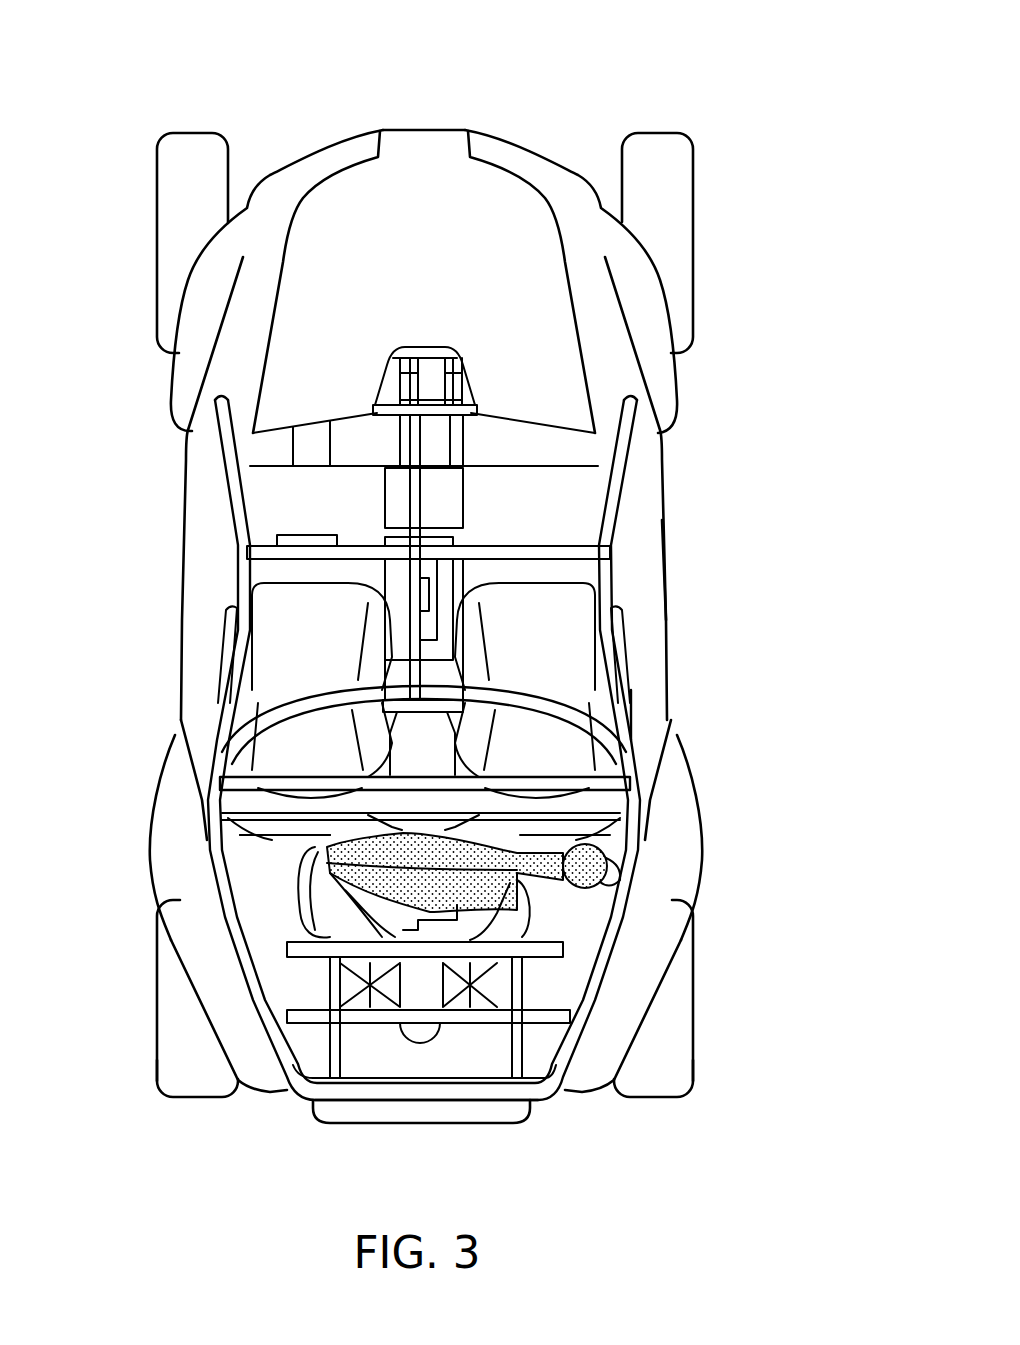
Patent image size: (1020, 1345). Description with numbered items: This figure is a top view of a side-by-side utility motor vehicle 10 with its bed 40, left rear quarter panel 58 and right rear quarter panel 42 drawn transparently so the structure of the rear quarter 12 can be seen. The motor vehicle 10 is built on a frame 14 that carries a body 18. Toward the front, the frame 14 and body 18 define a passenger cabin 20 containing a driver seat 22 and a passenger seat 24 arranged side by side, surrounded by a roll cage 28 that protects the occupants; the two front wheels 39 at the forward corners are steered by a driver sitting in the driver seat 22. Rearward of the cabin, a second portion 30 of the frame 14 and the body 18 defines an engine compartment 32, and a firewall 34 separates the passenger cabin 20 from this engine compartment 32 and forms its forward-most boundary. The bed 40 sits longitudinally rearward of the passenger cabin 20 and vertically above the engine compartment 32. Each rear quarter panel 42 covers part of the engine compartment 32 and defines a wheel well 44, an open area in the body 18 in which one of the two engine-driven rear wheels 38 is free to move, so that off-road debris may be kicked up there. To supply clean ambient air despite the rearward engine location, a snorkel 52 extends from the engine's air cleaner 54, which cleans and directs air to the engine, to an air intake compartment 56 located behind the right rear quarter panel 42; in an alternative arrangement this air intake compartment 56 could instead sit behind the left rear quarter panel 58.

The motor vehicle 10 is at (618, 71).
The rear quarter 12 is at (712, 999).
The frame 14 is at (556, 1100).
The body 18 is at (673, 787).
The passenger cabin 20 is at (421, 592).
The driver seat 22 is at (303, 665).
The passenger seat 24 is at (533, 638).
The roll cage 28 is at (250, 572).
The second portion of the frame 30 is at (437, 1105).
The engine compartment 32 is at (417, 1036).
The firewall 34 is at (300, 848).
The rear wheels 38 is at (183, 1047).
The front wheels 39 is at (178, 153).
The bed 40 is at (550, 985).
The rear quarter panel 42 is at (673, 863).
The wheel well 44 is at (177, 1106).
The snorkel 52 is at (632, 760).
The air cleaner 54 is at (447, 885).
The air intake compartment 56 is at (627, 836).
The left rear quarter panel 58 is at (163, 807).